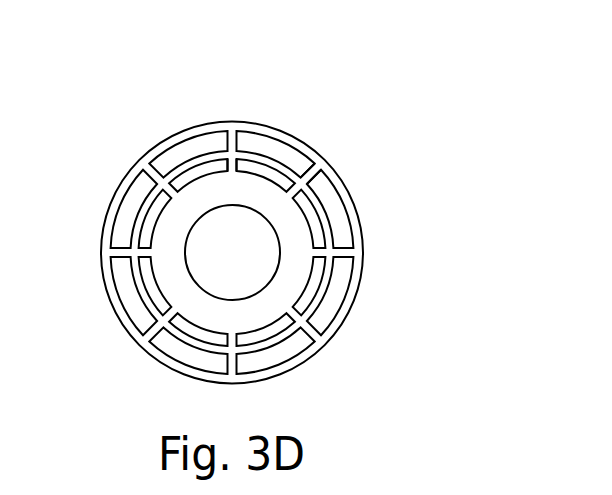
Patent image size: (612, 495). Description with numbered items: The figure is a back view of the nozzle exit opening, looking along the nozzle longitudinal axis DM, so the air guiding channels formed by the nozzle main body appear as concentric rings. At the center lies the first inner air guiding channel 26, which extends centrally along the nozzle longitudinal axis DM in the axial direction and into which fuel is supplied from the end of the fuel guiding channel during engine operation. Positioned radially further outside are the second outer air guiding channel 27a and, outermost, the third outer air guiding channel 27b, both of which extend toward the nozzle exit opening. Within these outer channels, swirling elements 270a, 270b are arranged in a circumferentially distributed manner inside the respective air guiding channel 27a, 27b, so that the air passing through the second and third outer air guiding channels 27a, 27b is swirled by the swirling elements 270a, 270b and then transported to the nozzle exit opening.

The swirling element 270a is at (238, 158).
The swirling element 270b is at (310, 172).
The third outer air guiding channel 27b is at (343, 232).
The second outer air guiding channel 27a is at (313, 287).
The first inner air guiding channel 26 is at (218, 283).
The nozzle longitudinal axis DM is at (232, 253).